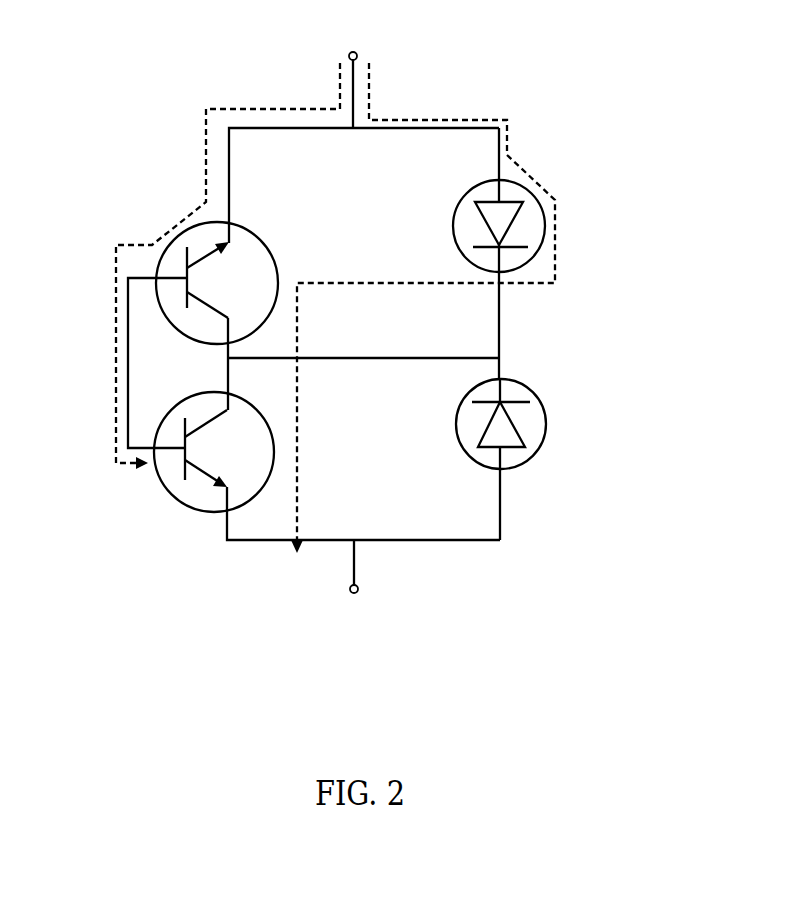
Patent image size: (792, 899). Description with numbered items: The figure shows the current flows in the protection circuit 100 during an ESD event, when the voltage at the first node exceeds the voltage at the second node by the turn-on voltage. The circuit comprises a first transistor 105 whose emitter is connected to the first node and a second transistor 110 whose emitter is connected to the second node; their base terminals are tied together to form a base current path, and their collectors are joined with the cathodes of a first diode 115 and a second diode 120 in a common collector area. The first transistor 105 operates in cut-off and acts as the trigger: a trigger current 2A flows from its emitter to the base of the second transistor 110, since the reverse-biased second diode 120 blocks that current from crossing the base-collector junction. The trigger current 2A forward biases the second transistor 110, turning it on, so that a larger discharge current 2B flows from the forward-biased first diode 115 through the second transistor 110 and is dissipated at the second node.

The protection circuit 100 is at (406, 322).
The first transistor 105 is at (272, 262).
The second transistor 110 is at (273, 455).
The first diode 115 is at (555, 202).
The second diode 120 is at (547, 415).
The trigger current 2A is at (202, 266).
The discharge current 2B is at (447, 308).